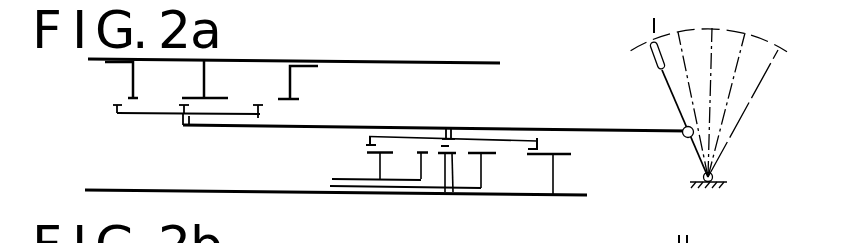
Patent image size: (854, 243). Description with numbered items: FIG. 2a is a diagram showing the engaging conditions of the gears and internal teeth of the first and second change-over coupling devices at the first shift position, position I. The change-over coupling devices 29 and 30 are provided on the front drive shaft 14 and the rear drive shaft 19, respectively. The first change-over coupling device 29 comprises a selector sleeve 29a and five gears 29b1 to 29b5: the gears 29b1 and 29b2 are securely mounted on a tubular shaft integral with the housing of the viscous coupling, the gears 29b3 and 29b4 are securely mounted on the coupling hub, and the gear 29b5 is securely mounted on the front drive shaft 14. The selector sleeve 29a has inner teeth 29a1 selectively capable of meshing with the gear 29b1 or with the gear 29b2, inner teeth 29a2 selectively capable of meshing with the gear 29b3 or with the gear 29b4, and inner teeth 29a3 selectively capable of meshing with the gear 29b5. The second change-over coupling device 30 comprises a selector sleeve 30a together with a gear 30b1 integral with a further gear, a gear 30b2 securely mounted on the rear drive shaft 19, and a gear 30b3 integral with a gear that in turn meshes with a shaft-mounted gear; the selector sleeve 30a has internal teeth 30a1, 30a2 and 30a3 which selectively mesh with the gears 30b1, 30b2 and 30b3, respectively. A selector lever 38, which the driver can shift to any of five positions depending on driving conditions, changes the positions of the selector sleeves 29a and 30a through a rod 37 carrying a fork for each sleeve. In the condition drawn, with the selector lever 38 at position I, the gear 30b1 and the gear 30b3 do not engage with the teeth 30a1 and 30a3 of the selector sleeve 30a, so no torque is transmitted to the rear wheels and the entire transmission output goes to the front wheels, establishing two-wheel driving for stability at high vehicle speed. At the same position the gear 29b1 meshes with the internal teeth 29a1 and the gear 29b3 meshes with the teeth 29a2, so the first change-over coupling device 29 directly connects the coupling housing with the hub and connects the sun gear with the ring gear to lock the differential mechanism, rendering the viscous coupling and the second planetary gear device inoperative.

The front drive shaft 14 is at (270, 193).
The rear drive shaft 19 is at (398, 42).
The change-over coupling device 29 is at (516, 213).
The selector sleeve 29a is at (412, 137).
The inner teeth 29a1 is at (368, 144).
The inner teeth 29a2 is at (442, 145).
The inner teeth 29a3 is at (538, 128).
The gear 29b1 is at (368, 154).
The gear 29b2 is at (427, 153).
The gear 29b3 is at (453, 193).
The gear 29b4 is at (496, 156).
The gear 29b5 is at (563, 155).
The second change-over coupling device 30 is at (231, 58).
The selector sleeve 30a is at (217, 127).
The internal teeth 30a1 is at (116, 107).
The internal teeth 30a2 is at (184, 106).
The internal teeth 30a3 is at (258, 127).
The gear 30b1 is at (128, 98).
The gear 30b2 is at (182, 98).
The gear 30b3 is at (280, 99).
The rod 37 is at (629, 130).
The selector lever 38 is at (667, 80).